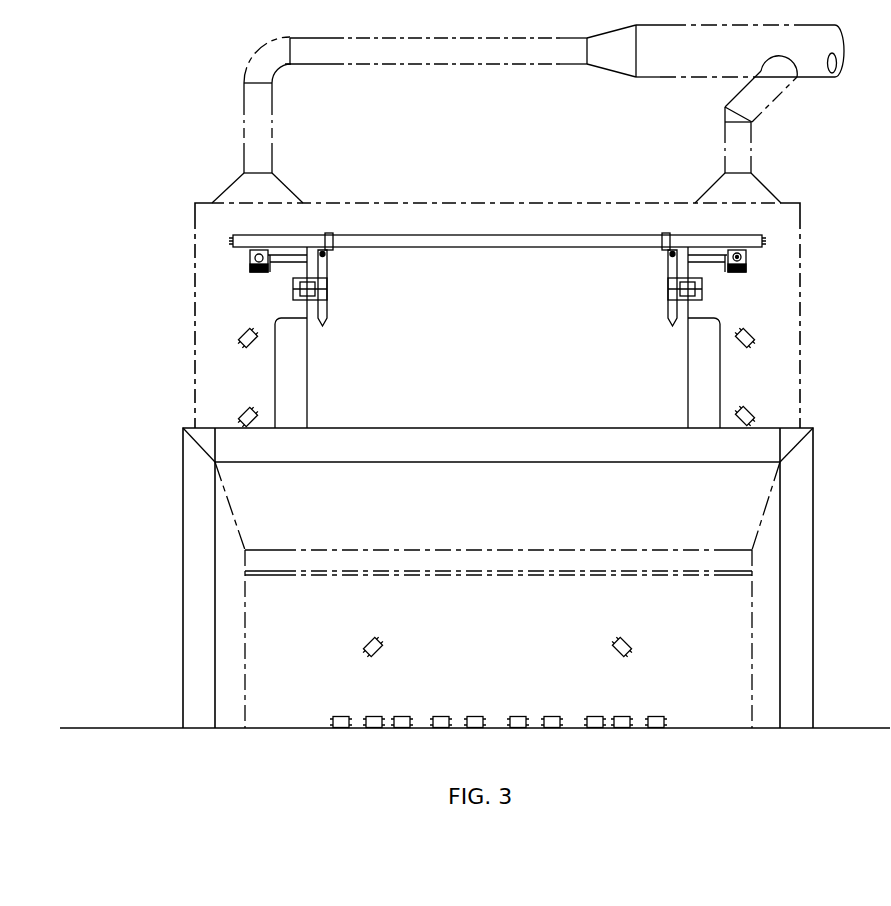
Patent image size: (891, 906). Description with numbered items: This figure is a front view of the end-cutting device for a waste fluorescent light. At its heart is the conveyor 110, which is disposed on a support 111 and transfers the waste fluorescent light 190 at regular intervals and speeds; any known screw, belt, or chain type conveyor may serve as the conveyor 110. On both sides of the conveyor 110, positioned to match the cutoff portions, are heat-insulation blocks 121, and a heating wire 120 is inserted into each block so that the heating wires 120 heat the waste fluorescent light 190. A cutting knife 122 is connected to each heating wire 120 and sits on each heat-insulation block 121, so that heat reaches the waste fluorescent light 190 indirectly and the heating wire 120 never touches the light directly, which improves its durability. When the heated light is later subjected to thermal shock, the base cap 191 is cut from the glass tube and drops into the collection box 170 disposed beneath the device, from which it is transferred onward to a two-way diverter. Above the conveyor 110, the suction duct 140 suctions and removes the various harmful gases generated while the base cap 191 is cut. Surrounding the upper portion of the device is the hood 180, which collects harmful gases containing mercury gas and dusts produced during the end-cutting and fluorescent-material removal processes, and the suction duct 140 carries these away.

The conveyor 110 is at (327, 288).
The support 111 is at (200, 560).
The heating wire 120 is at (747, 258).
The heat-insulation block 121 is at (746, 268).
The cutting knife 122 is at (745, 252).
The suction duct 140 is at (244, 106).
The collection box 170 is at (752, 625).
The hood 180 is at (475, 203).
The waste fluorescent light 190 is at (580, 235).
The base cap 191 is at (755, 414).